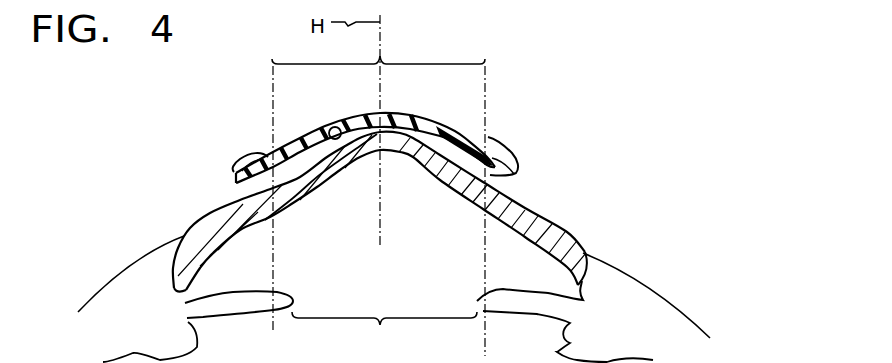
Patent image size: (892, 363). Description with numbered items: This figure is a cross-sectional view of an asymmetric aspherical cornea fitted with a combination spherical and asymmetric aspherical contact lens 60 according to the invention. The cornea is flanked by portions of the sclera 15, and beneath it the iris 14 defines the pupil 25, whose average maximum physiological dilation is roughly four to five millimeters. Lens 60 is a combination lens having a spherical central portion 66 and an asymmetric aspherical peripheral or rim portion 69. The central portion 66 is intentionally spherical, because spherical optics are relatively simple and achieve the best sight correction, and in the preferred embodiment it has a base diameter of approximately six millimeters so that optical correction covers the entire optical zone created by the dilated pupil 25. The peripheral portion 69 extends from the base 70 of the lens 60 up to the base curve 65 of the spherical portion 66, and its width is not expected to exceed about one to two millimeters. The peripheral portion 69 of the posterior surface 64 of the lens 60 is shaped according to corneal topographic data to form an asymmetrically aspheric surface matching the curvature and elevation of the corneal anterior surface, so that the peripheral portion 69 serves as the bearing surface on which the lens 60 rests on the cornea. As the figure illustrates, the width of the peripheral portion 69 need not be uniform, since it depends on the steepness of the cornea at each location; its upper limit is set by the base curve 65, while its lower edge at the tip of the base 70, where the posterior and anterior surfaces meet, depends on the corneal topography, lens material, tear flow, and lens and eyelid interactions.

The iris 14 is at (230, 246).
The sclera 15 is at (120, 297).
The pupil 25 is at (384, 335).
The lens 60 is at (400, 116).
The posterior surface 64 is at (335, 126).
The base curve 65 is at (274, 188).
The spherical central portion 66 is at (386, 57).
The peripheral portion 69 is at (253, 157).
The base 70 is at (236, 186).